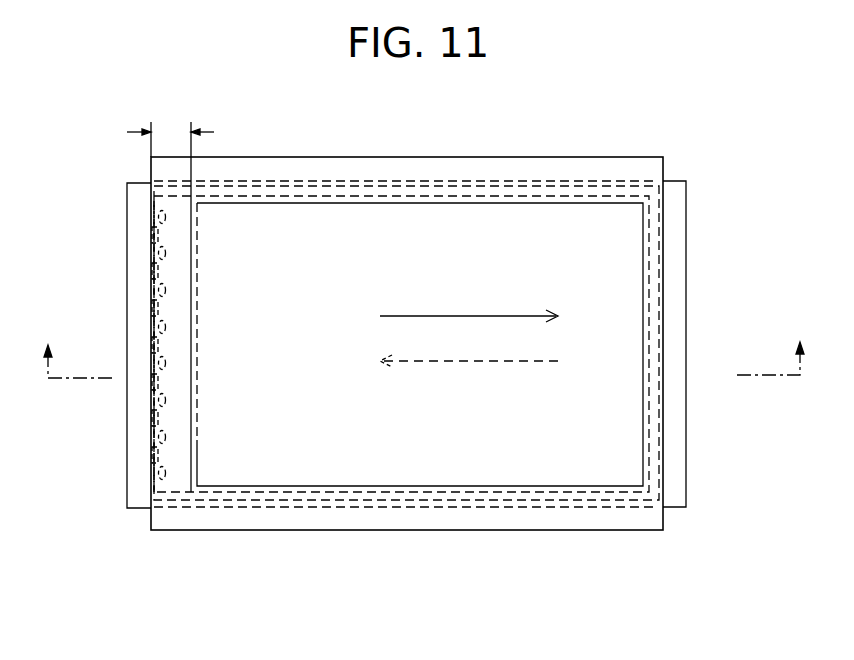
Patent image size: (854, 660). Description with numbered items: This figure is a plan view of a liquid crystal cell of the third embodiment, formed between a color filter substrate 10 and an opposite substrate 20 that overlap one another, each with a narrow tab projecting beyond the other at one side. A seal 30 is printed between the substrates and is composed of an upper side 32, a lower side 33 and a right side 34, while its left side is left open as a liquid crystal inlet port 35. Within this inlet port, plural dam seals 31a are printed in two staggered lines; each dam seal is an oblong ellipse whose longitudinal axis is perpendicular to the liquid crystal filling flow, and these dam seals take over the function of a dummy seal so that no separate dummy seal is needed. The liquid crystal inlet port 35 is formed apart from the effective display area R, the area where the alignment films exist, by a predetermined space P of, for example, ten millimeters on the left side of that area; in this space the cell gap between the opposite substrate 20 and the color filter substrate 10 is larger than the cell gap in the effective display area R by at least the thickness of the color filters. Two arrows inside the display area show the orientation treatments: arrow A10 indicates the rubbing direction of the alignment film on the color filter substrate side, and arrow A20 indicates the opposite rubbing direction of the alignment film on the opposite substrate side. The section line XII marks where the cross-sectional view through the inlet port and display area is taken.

The color filter substrate 10 is at (693, 493).
The opposite substrate 20 is at (654, 537).
The seal 30 is at (355, 503).
The dam seals 31a is at (153, 268).
The upper side 32 is at (503, 187).
The lower side 33 is at (577, 492).
The right side 34 is at (656, 290).
The liquid crystal inlet port 35 is at (153, 214).
The predetermined space P is at (170, 297).
The effective display area R is at (491, 487).
The rubbing direction arrow A10 is at (448, 366).
The rubbing direction arrow A20 is at (450, 313).
The section line XII is at (419, 344).